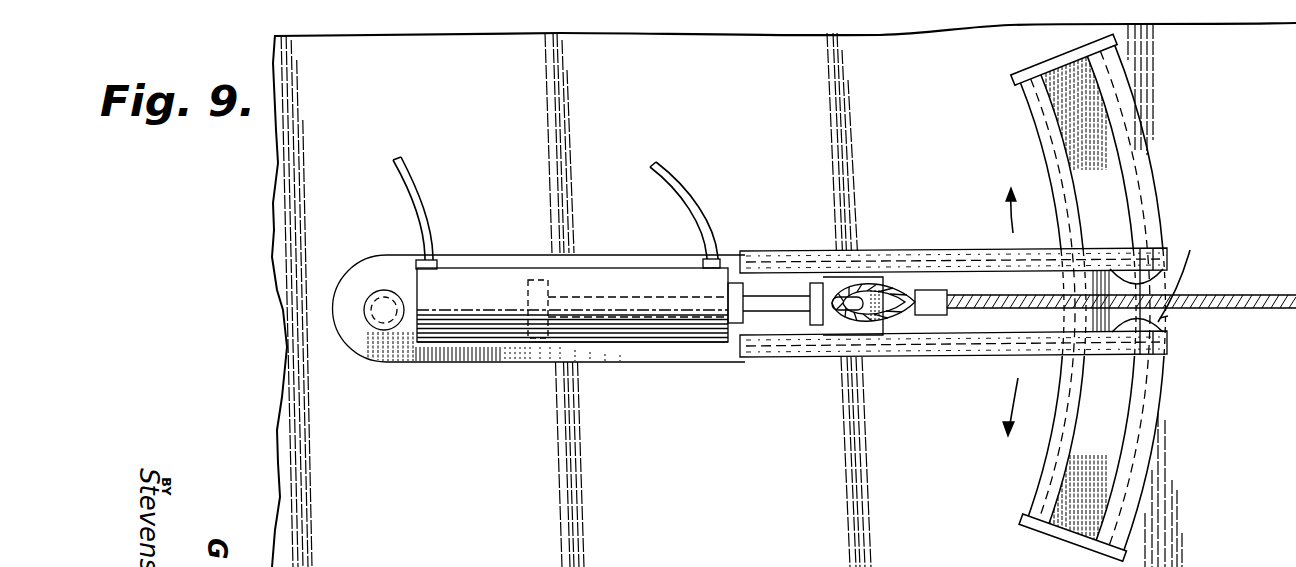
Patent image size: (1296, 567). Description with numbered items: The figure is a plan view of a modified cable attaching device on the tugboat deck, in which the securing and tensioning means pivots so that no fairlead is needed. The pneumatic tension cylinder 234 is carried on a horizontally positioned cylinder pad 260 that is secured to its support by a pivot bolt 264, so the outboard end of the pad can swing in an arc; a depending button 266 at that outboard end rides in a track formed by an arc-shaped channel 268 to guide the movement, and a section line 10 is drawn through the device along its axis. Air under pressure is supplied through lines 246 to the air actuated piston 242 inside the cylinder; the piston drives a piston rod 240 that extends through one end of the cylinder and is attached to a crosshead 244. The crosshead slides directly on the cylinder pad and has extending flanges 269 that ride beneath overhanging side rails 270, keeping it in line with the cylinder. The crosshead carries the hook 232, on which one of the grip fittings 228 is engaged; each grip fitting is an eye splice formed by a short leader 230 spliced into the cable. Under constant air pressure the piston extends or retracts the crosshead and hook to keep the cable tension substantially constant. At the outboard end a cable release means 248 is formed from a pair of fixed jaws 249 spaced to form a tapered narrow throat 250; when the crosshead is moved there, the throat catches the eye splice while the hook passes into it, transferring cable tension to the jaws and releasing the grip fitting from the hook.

The section line 10- 10 is at (364, 310).
The grip fittings 228 is at (880, 323).
The leader 230 is at (987, 305).
The hook 232 is at (848, 305).
The pneumatic tension cylinder 234 is at (488, 290).
The piston rod 240 is at (762, 300).
The air actuated piston 242 is at (540, 327).
The crosshead 244 is at (817, 285).
The lines 246 is at (417, 193).
The cable release means 248 is at (1168, 317).
The fixed jaws 249 is at (1190, 273).
The tapered narrow throat 250 is at (1117, 264).
The cylinder pad 260 is at (615, 362).
The pivot bolt 264 is at (380, 324).
The depending button 266 is at (1127, 343).
The arc-shaped channel 268 is at (1138, 108).
The extending flanges 269 is at (843, 273).
The overhanging side rails 270 is at (902, 256).